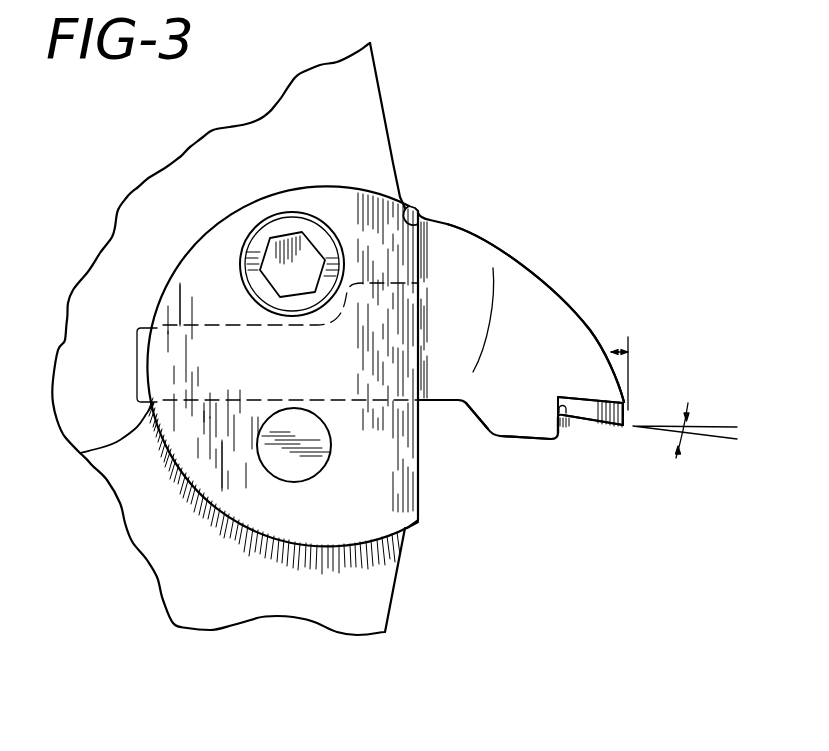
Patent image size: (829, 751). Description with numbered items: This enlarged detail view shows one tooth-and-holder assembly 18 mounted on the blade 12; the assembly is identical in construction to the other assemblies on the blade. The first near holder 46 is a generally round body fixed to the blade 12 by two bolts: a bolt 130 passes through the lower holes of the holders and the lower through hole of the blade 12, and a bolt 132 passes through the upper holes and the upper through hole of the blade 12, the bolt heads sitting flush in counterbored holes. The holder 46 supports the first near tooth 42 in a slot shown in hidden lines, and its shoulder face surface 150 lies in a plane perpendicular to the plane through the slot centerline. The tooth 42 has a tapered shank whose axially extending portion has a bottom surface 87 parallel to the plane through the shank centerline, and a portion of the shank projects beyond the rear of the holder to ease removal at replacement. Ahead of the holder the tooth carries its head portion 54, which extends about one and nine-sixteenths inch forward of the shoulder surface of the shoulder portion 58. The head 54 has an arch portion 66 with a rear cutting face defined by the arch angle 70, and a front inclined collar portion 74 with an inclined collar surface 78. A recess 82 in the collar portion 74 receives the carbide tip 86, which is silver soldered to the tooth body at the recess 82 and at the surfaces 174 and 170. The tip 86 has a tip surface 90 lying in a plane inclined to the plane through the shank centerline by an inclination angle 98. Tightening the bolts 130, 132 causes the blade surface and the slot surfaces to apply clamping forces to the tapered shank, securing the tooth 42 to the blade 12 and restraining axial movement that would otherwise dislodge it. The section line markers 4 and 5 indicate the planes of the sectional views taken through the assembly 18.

The section line 4- 4 is at (570, 71).
The section line 5- 5 is at (227, 313).
The blade 12 is at (177, 557).
The assembly 18 is at (521, 296).
The first near tooth 42 is at (527, 264).
The first near holder 46 is at (237, 208).
The head portion 54 is at (568, 340).
The shoulder portion 58 is at (448, 252).
The arch portion 66 is at (607, 380).
The arch angle 70 is at (614, 350).
The front inclined collar portion 74 is at (502, 421).
The inclined collar surface 78 is at (517, 443).
The recess 82 is at (558, 400).
The carbide tip 86 is at (610, 428).
The bottom surface 87 is at (365, 403).
The tip surface 90 is at (590, 428).
The inclination angle 98 is at (699, 430).
The bolt 130 is at (303, 457).
The bolt 132 is at (302, 260).
The shoulder face surface 150 is at (408, 215).
The soldering surface 170 is at (601, 398).
The soldering surface 174 is at (558, 436).